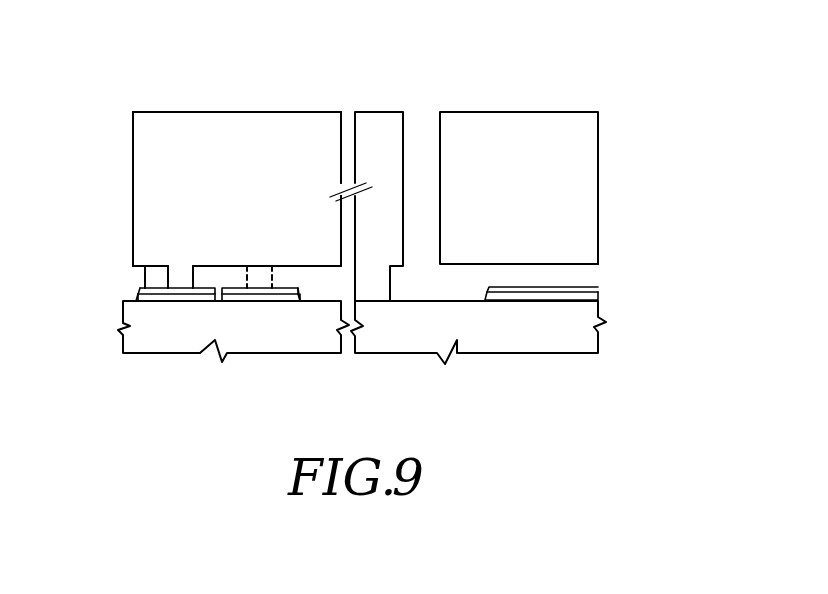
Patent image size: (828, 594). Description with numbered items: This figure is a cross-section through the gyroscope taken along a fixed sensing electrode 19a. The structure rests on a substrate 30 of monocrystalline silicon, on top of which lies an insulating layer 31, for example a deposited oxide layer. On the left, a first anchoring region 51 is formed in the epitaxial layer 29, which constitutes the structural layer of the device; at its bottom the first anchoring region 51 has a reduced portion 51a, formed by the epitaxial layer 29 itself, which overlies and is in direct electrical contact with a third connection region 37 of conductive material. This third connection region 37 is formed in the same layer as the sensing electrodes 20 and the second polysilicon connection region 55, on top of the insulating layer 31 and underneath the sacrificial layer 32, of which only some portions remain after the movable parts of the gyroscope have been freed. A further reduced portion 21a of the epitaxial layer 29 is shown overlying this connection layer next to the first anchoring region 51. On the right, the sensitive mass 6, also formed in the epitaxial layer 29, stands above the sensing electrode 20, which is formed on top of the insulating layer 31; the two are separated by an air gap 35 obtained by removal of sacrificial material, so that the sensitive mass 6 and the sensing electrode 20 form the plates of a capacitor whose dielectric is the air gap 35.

The epitaxial layer 29 is at (146, 180).
The first anchoring region 51 is at (147, 128).
The reduced portion 51a is at (178, 277).
The reduced portion 21a is at (258, 266).
The fixed sensing electrode 19a is at (388, 125).
The sacrificial layer 32 is at (153, 283).
The third connection region 37 is at (140, 292).
The second connection region 55 is at (300, 301).
The insulating layer 31 is at (218, 301).
The sensing electrode 20 is at (600, 290).
The sensitive mass 6 is at (514, 207).
The air gap 35 is at (592, 275).
The substrate 30 is at (265, 333).